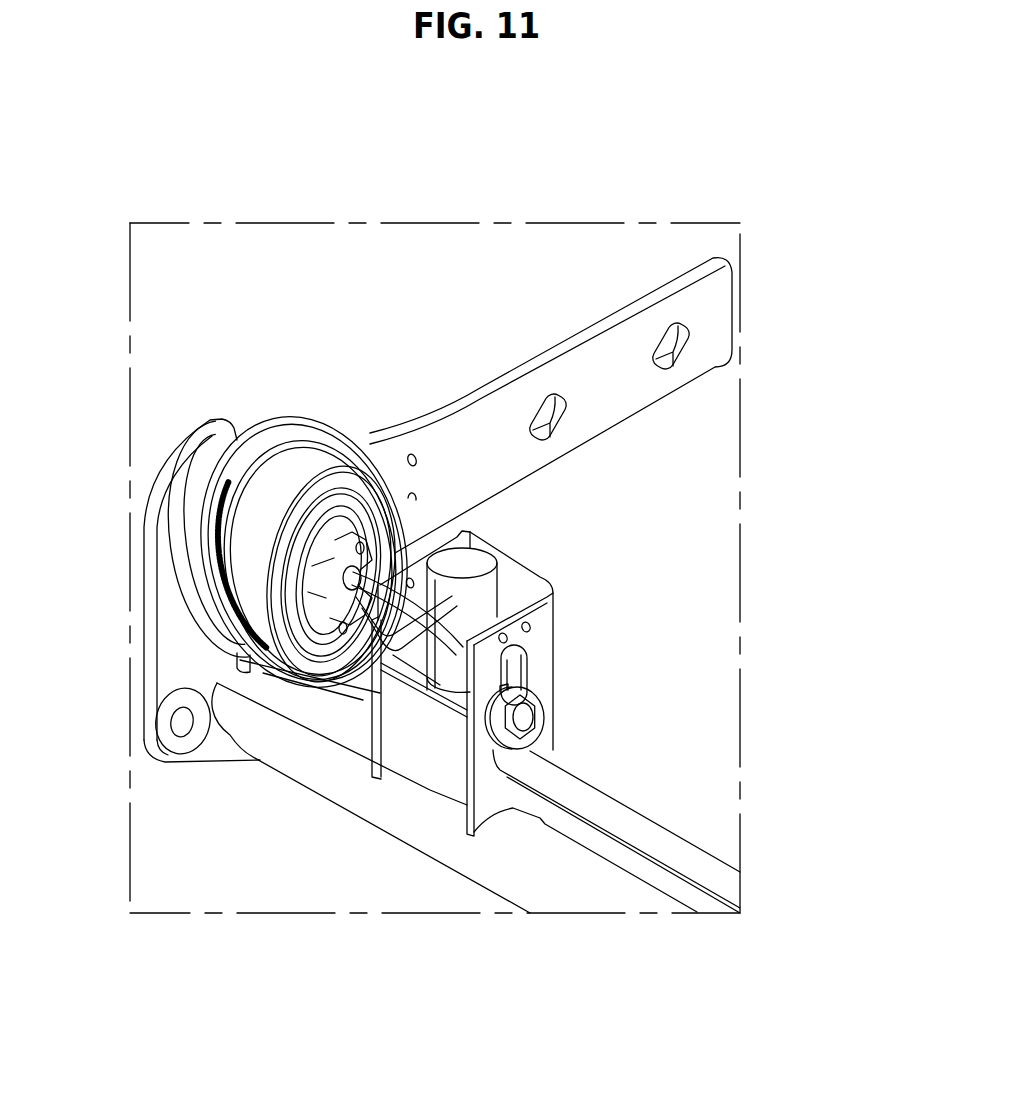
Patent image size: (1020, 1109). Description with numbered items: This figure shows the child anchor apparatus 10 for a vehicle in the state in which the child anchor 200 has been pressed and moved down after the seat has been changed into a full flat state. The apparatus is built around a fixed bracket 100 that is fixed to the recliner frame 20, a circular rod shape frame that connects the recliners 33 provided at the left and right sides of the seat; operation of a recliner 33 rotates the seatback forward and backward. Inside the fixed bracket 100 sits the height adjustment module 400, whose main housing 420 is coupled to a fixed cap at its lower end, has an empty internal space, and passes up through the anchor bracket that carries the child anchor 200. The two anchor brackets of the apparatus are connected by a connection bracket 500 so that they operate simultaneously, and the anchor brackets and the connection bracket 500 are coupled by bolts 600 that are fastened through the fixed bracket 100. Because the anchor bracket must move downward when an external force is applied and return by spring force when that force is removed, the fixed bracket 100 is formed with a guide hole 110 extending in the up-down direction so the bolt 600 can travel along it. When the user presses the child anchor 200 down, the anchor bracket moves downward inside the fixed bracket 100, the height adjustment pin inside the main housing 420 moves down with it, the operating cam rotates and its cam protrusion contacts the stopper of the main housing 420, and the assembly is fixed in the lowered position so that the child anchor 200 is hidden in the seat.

The child anchor apparatus 10 is at (558, 613).
The recliner frame 20 is at (567, 883).
The recliner 33 is at (200, 524).
The fixed bracket 100 is at (493, 792).
The guide hole 110 is at (523, 670).
The child anchor 200 is at (400, 540).
The height adjustment module 400 is at (468, 562).
The main housing 420 is at (480, 572).
The connection bracket 500 is at (693, 865).
The bolt 600 is at (535, 731).